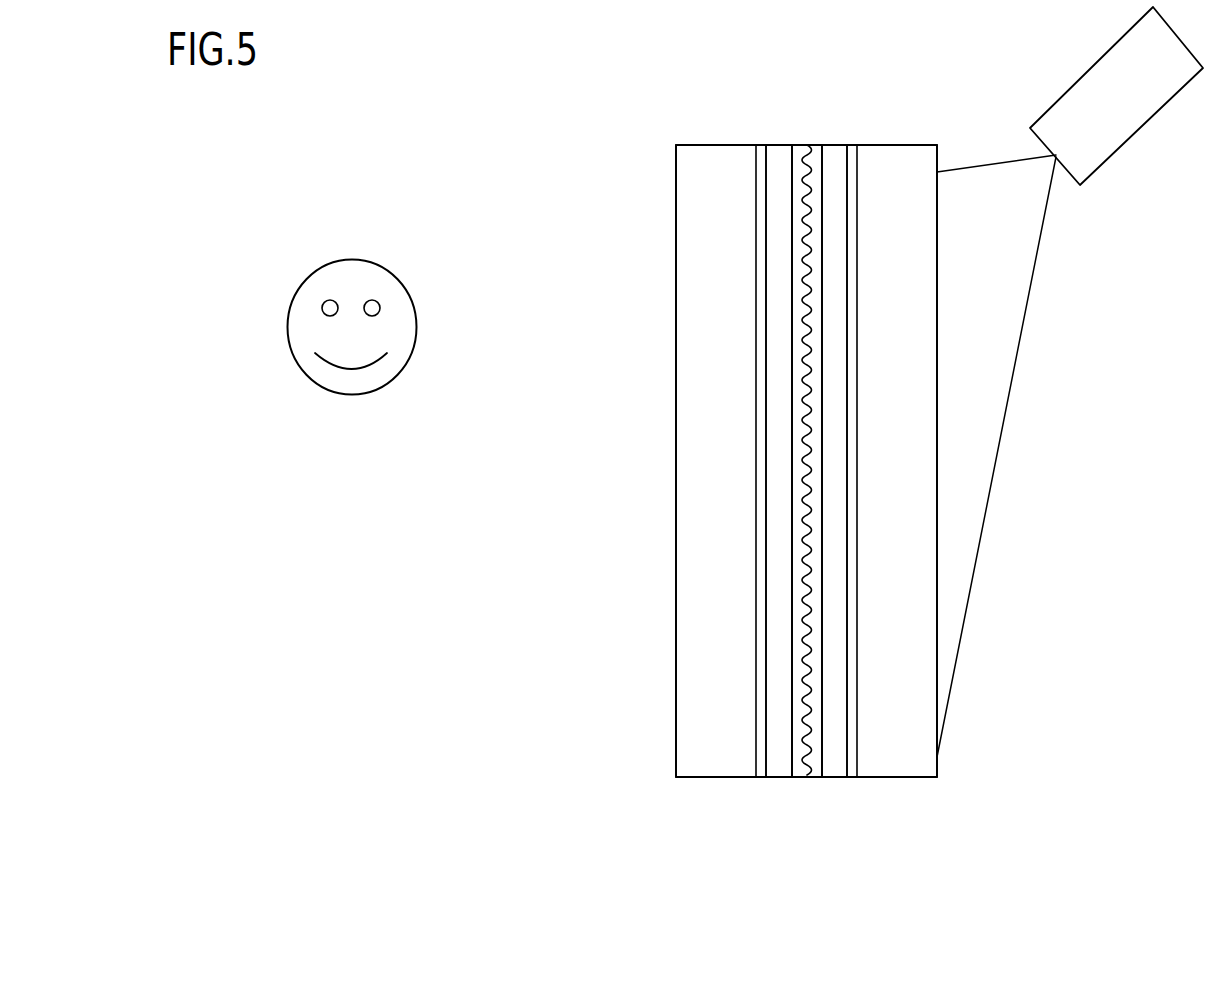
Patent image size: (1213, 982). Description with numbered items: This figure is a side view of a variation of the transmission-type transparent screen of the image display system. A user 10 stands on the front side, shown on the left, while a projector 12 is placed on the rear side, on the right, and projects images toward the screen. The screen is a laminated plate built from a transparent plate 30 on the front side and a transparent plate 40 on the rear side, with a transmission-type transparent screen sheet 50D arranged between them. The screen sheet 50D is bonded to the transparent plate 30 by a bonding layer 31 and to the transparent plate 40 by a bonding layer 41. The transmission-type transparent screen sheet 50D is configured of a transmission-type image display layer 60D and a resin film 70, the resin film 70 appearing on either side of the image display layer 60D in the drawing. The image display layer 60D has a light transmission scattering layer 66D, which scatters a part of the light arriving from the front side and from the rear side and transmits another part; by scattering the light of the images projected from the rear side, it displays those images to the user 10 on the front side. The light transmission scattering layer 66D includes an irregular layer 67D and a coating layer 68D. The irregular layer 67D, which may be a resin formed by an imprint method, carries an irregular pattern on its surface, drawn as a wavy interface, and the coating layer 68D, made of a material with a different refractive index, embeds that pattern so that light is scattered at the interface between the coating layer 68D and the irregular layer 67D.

The user 10 is at (405, 287).
The projector 12 is at (1092, 62).
The transparent plate 30 is at (717, 153).
The bonding layer 31 is at (760, 152).
The transparent plate 40 is at (895, 152).
The bonding layer 41 is at (852, 152).
The transmission-type transparent screen sheet 50D is at (806, 504).
The transmission-type image display layer 60D is at (815, 510).
The light transmission scattering layer 66D is at (814, 510).
The irregular layer 67D is at (798, 768).
The coating layer 68D is at (815, 768).
The resin film 70 is at (780, 768).